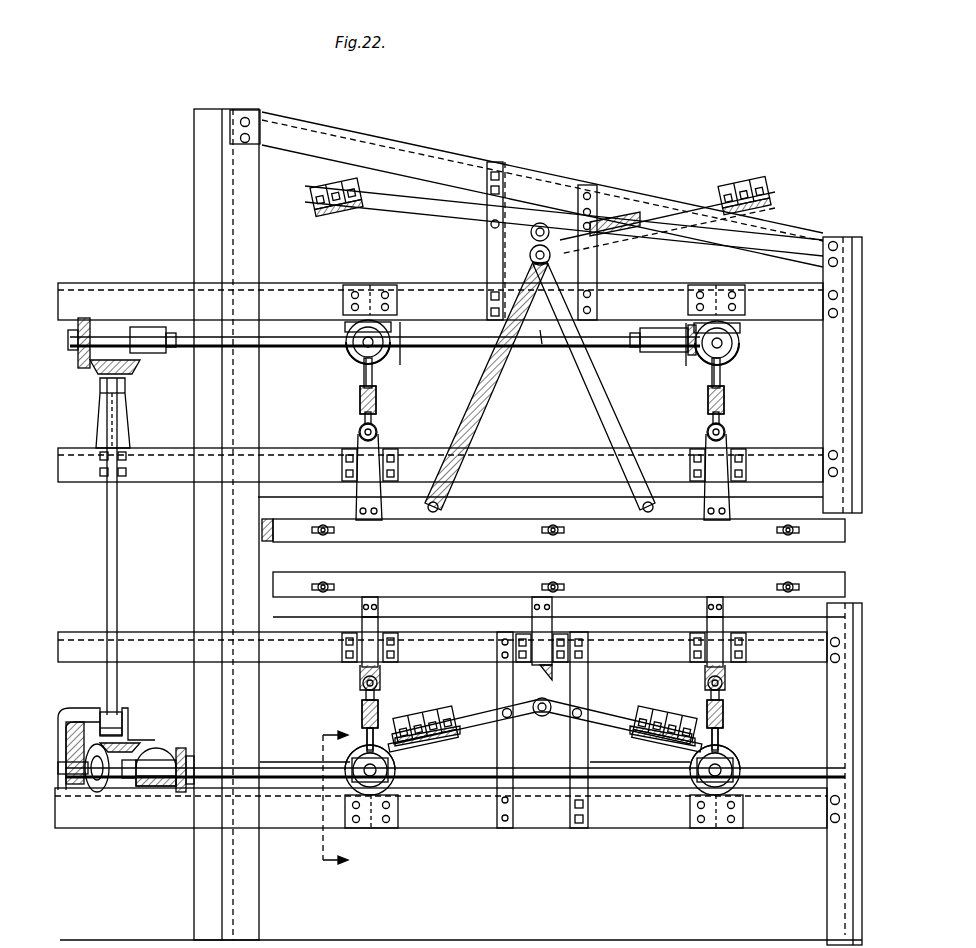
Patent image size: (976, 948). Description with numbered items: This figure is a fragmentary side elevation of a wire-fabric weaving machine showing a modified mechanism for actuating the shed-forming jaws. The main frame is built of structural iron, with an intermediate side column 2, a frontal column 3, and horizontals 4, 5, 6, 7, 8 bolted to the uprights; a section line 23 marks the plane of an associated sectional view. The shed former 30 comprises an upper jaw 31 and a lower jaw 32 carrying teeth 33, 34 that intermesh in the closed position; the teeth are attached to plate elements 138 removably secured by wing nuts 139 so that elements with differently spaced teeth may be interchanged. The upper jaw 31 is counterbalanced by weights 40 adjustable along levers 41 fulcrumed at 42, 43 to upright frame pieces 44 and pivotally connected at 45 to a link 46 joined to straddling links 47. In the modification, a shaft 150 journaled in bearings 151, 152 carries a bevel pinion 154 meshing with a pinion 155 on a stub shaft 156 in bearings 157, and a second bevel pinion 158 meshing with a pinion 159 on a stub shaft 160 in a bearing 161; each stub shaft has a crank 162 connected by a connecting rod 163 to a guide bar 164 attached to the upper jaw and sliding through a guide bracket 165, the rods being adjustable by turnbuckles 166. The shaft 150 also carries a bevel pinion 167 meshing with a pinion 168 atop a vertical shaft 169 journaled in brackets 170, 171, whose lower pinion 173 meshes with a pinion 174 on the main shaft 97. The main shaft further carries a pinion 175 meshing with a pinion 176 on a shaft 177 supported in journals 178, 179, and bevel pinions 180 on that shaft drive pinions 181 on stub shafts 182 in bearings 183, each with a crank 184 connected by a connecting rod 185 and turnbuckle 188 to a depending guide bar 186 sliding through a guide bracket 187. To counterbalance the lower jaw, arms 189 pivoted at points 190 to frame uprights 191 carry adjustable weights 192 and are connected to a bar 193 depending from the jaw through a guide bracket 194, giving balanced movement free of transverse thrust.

The intermediate side column 2 is at (205, 128).
The frontal column 3 is at (857, 240).
The horizontal 4 is at (470, 160).
The horizontal 5 is at (472, 292).
The horizontal 6 is at (560, 458).
The horizontal 7 is at (442, 647).
The horizontal 8 is at (448, 830).
The section line 23 is at (322, 793).
The shed former 30 is at (543, 557).
The upper member or jaw 31 is at (585, 516).
The lower member or jaw 32 is at (595, 612).
The teeth 33 is at (612, 542).
The teeth 34 is at (545, 578).
The weight 40 is at (320, 186).
The lever 41 is at (608, 230).
The fulcrum 42 is at (490, 222).
The fulcrum 43 is at (598, 214).
The upright frame piece 44 is at (586, 268).
The pivotal connection 45 is at (541, 224).
The link 46 is at (530, 252).
The straddling link 47 is at (585, 370).
The main shaft 97 is at (68, 790).
The plate element 138 is at (370, 540).
The wing nut 139 is at (760, 530).
The shaft 150 is at (560, 340).
The bearing 151 is at (145, 354).
The bearing 152 is at (670, 354).
The bevel pinion 154 is at (700, 362).
The pinion 155 is at (738, 358).
The stub shaft 156 is at (738, 338).
The bearing 157 is at (740, 322).
The bevel pinion 158 is at (395, 350).
The pinion 159 is at (348, 348).
The stub shaft 160 is at (352, 338).
The bearing 161 is at (345, 320).
The crank 162 is at (360, 362).
The connecting rod 163 is at (358, 395).
The guide bar 164 is at (360, 432).
The guide bracket 165 is at (365, 460).
The turnbuckle 166 is at (380, 405).
The bevel pinion 167 is at (86, 366).
The bevel pinion 168 is at (128, 375).
The vertical shaft 169 is at (115, 545).
The bracket 170 is at (122, 418).
The bracket 171 is at (122, 718).
The bevel pinion 173 is at (168, 748).
The bevel pinion 174 is at (116, 786).
The bevel pinion 175 is at (185, 735).
The bevel pinion 176 is at (185, 800).
The shaft 177 is at (312, 765).
The journal 178 is at (150, 792).
The journal 179 is at (650, 750).
The bevel pinion 180 is at (398, 752).
The pinion 181 is at (348, 776).
The stub shaft 182 is at (355, 788).
The bearing 183 is at (348, 804).
The crank 184 is at (396, 796).
The connecting rod 185 is at (365, 725).
The guide bar 186 is at (360, 673).
The guide bracket 187 is at (340, 647).
The turnbuckle 188 is at (378, 706).
The arm 189 is at (492, 718).
The pivot point 190 is at (578, 716).
The frame upright 191 is at (580, 753).
The weight 192 is at (428, 712).
The bar 193 is at (556, 682).
The guide bracket 194 is at (592, 646).